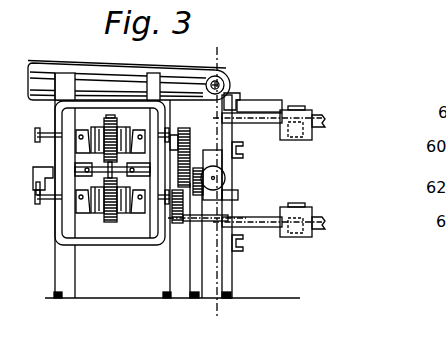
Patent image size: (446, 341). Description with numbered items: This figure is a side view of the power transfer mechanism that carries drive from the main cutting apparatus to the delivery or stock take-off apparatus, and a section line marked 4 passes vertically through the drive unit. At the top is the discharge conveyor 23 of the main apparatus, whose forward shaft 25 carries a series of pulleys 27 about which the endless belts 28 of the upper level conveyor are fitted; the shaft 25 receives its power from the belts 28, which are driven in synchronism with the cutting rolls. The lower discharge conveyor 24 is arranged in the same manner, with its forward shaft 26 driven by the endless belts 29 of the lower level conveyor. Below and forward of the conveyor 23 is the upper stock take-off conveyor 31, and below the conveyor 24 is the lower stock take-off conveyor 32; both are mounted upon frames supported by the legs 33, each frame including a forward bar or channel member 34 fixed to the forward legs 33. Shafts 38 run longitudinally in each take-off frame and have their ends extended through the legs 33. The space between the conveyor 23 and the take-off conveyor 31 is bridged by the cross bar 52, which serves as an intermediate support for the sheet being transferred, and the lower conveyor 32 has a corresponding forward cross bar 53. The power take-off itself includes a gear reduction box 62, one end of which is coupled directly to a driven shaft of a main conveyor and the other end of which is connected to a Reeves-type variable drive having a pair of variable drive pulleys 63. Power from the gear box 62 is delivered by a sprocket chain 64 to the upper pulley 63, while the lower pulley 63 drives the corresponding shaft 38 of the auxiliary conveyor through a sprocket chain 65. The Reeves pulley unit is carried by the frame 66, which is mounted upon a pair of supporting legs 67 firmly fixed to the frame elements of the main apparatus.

The section line 4- 4 is at (197, 48).
The discharge conveyor 23 is at (127, 50).
The discharge conveyor 24 is at (22, 195).
The forward shaft 25 is at (232, 86).
The forward shaft 26 is at (236, 175).
The pulleys 27 is at (229, 73).
The endless belts 28 is at (127, 53).
The endless belts 29 is at (44, 161).
The upper stock take-off conveyor 31 is at (283, 112).
The lower stock take-off conveyor 32 is at (285, 205).
The legs 33 is at (233, 272).
The forward bar or channel member 34 is at (241, 151).
The shafts 38 is at (320, 118).
The cross bar 52 is at (272, 88).
The forward cross bar 53 is at (237, 197).
The gear reduction box 62 is at (210, 162).
The variable drive pulleys 63 is at (100, 124).
The sprocket chain 64 is at (183, 140).
The sprocket chain 65 is at (176, 233).
The frame 66 is at (128, 247).
The supporting legs 67 is at (62, 291).